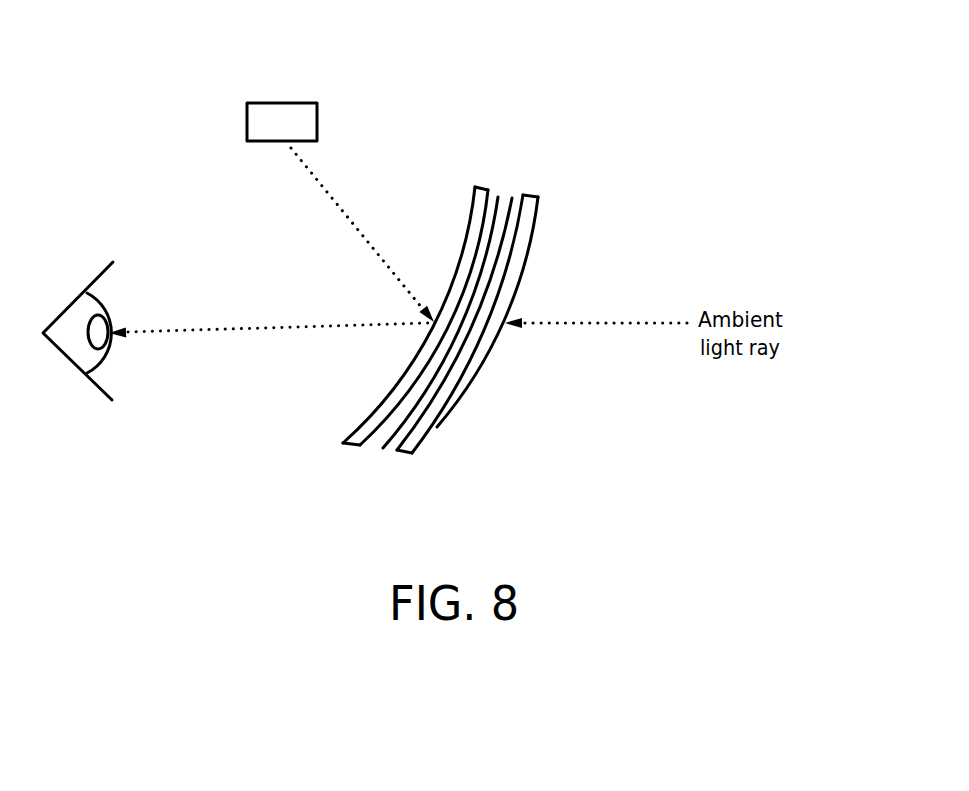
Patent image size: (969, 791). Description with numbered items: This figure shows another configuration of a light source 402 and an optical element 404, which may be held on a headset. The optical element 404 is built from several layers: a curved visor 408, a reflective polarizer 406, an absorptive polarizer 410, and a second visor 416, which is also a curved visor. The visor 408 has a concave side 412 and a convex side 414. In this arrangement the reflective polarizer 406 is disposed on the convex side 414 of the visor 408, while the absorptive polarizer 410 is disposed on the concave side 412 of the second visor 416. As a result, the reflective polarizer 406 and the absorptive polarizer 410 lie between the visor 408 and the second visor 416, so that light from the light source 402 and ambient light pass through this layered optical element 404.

The light source 402 is at (268, 103).
The optical element 404 is at (443, 316).
The reflective polarizer 406 is at (380, 446).
The visor 408 is at (368, 415).
The absorptive polarizer 410 is at (420, 415).
The concave side 412 is at (363, 355).
The convex side 414 is at (522, 361).
The second visor 416 is at (503, 333).